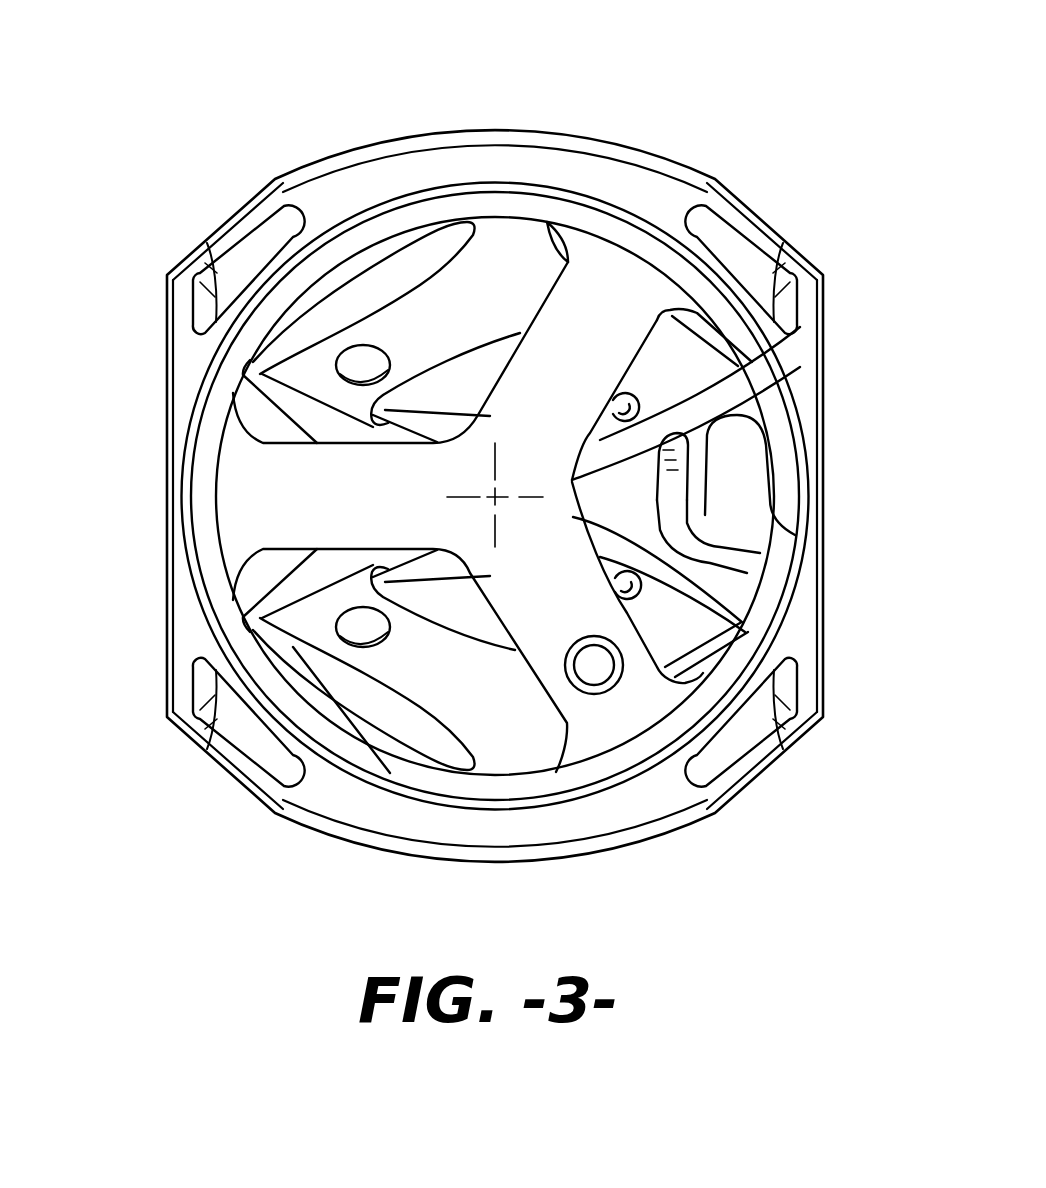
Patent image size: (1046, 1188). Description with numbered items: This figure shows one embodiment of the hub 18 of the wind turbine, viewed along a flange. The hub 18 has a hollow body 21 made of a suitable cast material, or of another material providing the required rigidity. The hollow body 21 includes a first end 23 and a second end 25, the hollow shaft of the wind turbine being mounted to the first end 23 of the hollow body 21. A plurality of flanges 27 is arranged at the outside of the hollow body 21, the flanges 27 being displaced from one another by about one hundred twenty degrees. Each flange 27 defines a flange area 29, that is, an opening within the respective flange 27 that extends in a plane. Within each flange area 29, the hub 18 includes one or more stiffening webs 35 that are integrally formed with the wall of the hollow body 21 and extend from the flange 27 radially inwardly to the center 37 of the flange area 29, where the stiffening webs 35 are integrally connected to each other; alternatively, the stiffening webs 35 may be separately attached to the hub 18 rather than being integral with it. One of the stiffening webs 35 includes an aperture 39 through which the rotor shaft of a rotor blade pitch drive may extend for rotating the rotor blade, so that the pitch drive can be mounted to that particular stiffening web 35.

The hub 18 is at (636, 106).
The hollow body 21 is at (653, 197).
The first end 23 is at (868, 388).
The second end 25 is at (126, 372).
The flange 27 is at (707, 417).
The flange area 29 is at (386, 786).
The stiffening web 35 is at (582, 327).
The center 37 is at (495, 494).
The aperture 39 is at (597, 694).